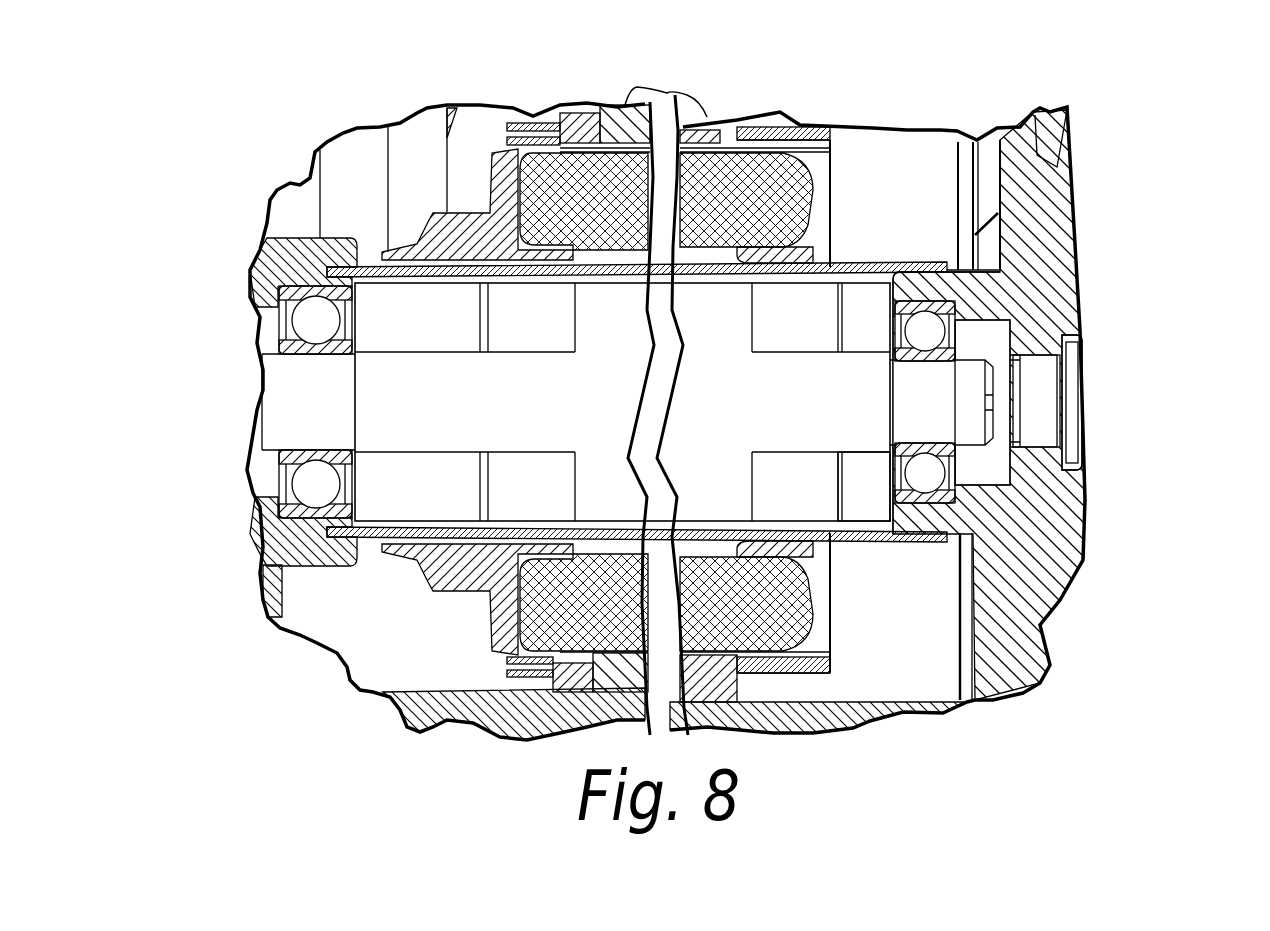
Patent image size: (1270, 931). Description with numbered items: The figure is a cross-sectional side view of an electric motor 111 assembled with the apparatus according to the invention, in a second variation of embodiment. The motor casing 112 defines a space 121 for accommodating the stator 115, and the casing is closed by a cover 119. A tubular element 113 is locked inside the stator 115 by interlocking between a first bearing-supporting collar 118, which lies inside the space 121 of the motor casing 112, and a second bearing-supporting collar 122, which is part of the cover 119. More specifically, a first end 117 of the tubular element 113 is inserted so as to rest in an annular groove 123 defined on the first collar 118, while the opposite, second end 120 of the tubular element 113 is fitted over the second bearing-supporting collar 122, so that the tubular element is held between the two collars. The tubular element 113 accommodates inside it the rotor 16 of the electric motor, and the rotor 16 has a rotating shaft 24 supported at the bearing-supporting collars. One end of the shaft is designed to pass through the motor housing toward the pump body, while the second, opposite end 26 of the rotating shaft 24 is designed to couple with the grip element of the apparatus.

The rotor 16 is at (760, 317).
The rotating shaft 24 is at (807, 427).
The second end 26 is at (963, 383).
The electric motor 111 is at (1097, 207).
The motor casing 112 is at (497, 727).
The tubular element 113 is at (835, 273).
The stator 115 is at (455, 228).
The first end 117 is at (370, 540).
The first bearing-supporting collar 118 is at (348, 257).
The cover 119 is at (1055, 290).
The second end 120 is at (867, 537).
The space 121 is at (417, 635).
The second bearing-supporting collar 122 is at (933, 287).
The annular groove 123 is at (327, 530).